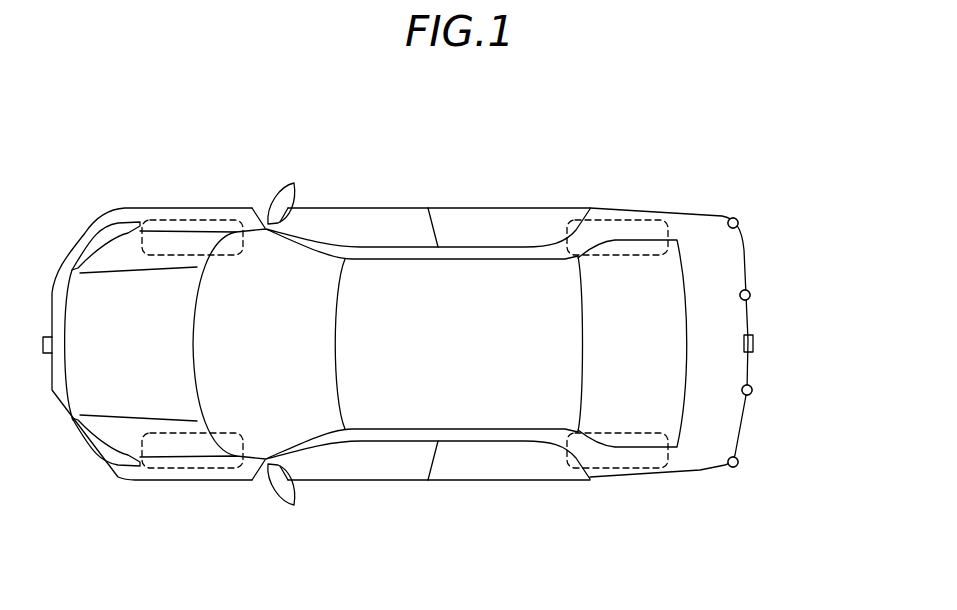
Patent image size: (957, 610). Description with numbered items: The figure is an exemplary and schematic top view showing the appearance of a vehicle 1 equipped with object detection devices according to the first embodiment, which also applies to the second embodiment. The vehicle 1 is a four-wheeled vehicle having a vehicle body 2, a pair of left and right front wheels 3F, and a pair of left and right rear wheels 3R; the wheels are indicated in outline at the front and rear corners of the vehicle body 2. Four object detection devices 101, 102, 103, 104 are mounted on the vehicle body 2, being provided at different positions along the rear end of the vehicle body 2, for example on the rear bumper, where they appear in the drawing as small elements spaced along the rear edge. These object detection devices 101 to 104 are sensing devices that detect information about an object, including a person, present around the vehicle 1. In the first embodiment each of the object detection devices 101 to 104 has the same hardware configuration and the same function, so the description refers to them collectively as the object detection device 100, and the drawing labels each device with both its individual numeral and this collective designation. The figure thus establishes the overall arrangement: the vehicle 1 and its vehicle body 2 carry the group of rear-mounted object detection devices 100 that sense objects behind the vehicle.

The vehicle 1 is at (505, 132).
The vehicle body 2 is at (692, 212).
The front wheels 3F is at (188, 220).
The rear wheels 3R is at (615, 220).
The object detection device 100 is at (799, 310).
The object detection device 101 is at (738, 461).
The object detection device 102 is at (752, 391).
The object detection device 103 is at (750, 294).
The object detection device 104 is at (738, 220).